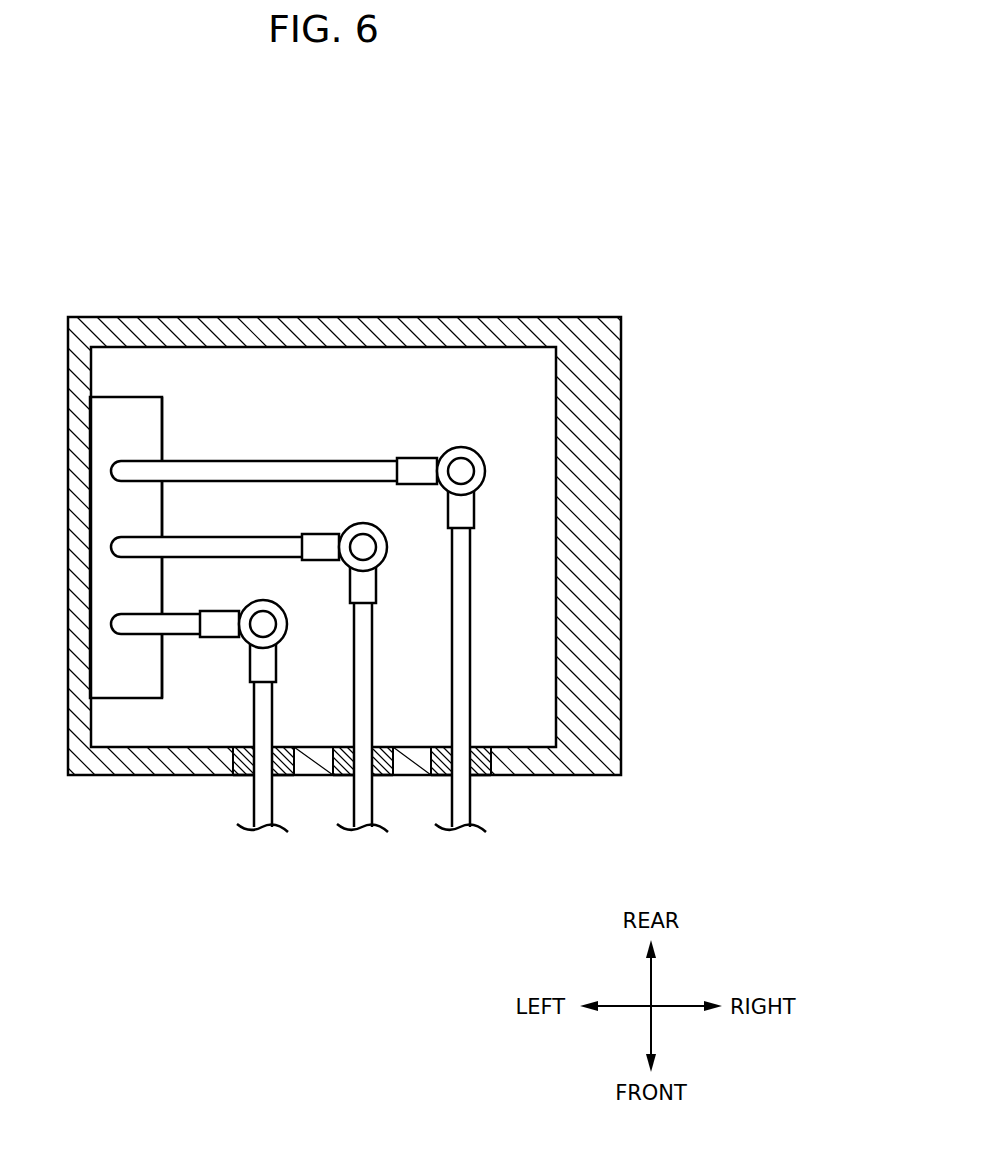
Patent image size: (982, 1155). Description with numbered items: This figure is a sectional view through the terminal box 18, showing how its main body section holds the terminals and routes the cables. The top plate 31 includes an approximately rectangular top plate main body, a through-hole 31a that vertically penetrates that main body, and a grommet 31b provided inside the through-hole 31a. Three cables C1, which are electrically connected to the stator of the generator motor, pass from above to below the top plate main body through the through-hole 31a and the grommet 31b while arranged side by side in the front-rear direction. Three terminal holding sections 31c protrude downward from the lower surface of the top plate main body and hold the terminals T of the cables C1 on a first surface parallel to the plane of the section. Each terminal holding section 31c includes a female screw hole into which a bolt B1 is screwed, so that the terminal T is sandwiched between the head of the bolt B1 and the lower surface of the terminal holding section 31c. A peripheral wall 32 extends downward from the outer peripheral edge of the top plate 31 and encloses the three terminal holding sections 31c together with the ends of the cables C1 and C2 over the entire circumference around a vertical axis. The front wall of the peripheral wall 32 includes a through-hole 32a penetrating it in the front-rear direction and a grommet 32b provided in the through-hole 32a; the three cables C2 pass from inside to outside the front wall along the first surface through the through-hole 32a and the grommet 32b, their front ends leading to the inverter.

The terminal box 18 is at (578, 250).
The top plate 31 is at (358, 372).
The through-hole 31a is at (161, 440).
The grommet 31b is at (122, 413).
The terminal holding sections 31c is at (265, 600).
The peripheral wall 32 is at (608, 471).
The through-hole 32a is at (477, 748).
The grommet 32b is at (414, 850).
The cables C1 is at (185, 618).
The cables C2 is at (265, 700).
The terminals T is at (223, 620).
The bolt B1 is at (263, 624).